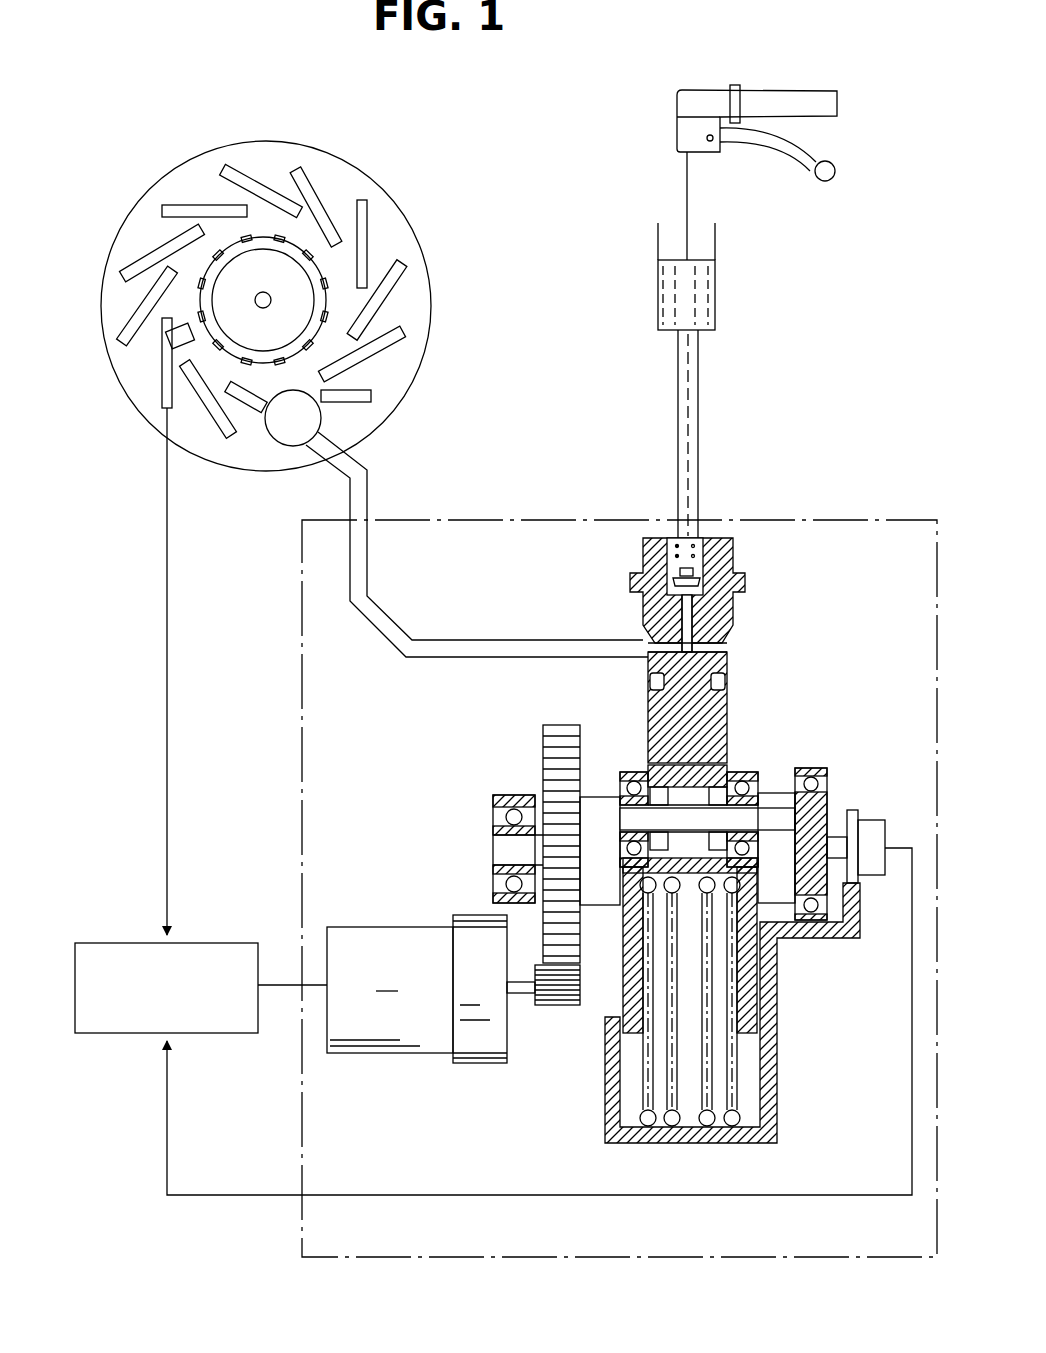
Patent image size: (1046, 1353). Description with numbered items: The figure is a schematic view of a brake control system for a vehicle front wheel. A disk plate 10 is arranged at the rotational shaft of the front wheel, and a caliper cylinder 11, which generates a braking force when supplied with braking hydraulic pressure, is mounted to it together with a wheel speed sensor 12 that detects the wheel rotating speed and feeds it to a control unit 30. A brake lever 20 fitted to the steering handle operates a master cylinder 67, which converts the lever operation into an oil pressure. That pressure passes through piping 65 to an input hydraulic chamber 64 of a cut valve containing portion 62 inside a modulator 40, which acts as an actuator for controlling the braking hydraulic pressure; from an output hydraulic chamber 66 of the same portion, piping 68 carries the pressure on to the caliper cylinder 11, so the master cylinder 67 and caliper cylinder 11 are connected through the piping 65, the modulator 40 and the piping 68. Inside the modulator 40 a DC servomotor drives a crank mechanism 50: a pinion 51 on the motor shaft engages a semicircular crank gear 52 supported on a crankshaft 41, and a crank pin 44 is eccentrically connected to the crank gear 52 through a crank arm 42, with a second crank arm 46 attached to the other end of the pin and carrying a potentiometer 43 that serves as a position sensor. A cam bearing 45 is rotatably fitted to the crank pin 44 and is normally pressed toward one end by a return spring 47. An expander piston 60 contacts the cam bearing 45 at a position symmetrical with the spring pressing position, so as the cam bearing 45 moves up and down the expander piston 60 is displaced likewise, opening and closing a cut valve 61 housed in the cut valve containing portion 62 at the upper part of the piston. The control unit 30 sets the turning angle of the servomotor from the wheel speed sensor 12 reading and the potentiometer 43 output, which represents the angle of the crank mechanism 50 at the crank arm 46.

The disk plate 10 is at (401, 231).
The caliper cylinder 11 is at (291, 438).
The wheel speed sensor 12 is at (164, 352).
The brake lever 20 is at (828, 181).
The control unit 30 is at (219, 943).
The modulator 40 is at (862, 511).
The crankshaft 41 is at (493, 850).
The crank arm 42 is at (600, 797).
The potentiometer 43 is at (876, 836).
The crank pin 44 is at (762, 798).
The cam bearing 45 is at (702, 778).
The crank arm 46 is at (768, 828).
The return spring 47 is at (730, 1088).
The crank mechanism 50 is at (515, 738).
The pinion 51 is at (563, 1006).
The crank gear 52 is at (562, 725).
The expander piston 60 is at (712, 719).
The cut valve 61 is at (690, 626).
The cut valve containing portion 62 is at (677, 561).
The input hydraulic chamber 64 is at (675, 542).
The piping 65 is at (698, 412).
The output hydraulic chamber 66 is at (650, 648).
The master cylinder 67 is at (658, 298).
The piping 68 is at (438, 640).